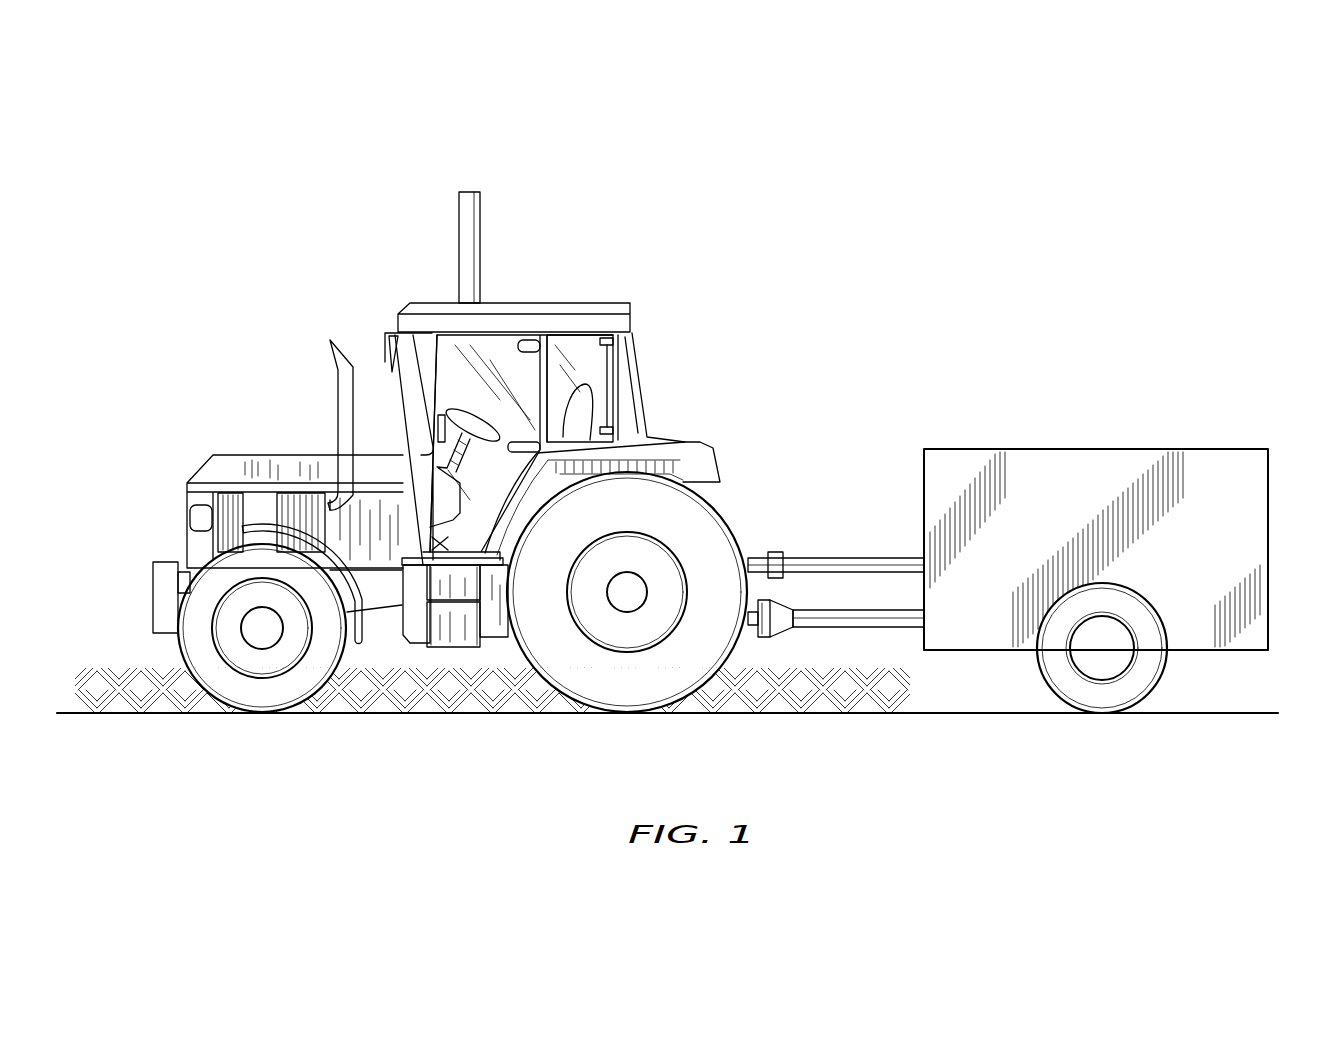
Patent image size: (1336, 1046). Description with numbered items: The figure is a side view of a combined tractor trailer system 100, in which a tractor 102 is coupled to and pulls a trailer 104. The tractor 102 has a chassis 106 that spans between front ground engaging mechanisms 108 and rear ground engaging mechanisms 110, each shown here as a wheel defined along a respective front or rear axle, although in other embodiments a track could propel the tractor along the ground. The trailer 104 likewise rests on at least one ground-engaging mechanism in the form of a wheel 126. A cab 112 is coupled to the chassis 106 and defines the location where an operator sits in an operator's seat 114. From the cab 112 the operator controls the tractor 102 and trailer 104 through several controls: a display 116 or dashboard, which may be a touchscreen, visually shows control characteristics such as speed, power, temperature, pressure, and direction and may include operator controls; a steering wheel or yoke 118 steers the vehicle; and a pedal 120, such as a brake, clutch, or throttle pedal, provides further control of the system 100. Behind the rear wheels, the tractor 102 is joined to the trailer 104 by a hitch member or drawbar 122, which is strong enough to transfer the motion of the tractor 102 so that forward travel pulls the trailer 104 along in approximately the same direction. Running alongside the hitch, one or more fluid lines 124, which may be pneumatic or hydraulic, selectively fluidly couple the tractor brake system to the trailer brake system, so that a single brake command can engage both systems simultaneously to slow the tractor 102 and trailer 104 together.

The combined tractor trailer system 100 is at (181, 162).
The tractor 102 is at (412, 284).
The trailer 104 is at (1060, 452).
The chassis 106 is at (393, 605).
The front ground engaging mechanisms 108 is at (262, 695).
The rear ground engaging mechanisms 110 is at (627, 690).
The cab 112 is at (508, 357).
The operator's seat 114 is at (585, 395).
The display 116 is at (438, 420).
The steering wheel 118 is at (460, 410).
The pedal 120 is at (448, 538).
The hitch member 122 is at (780, 620).
The fluid lines 124 is at (760, 555).
The wheel 126 is at (1105, 690).